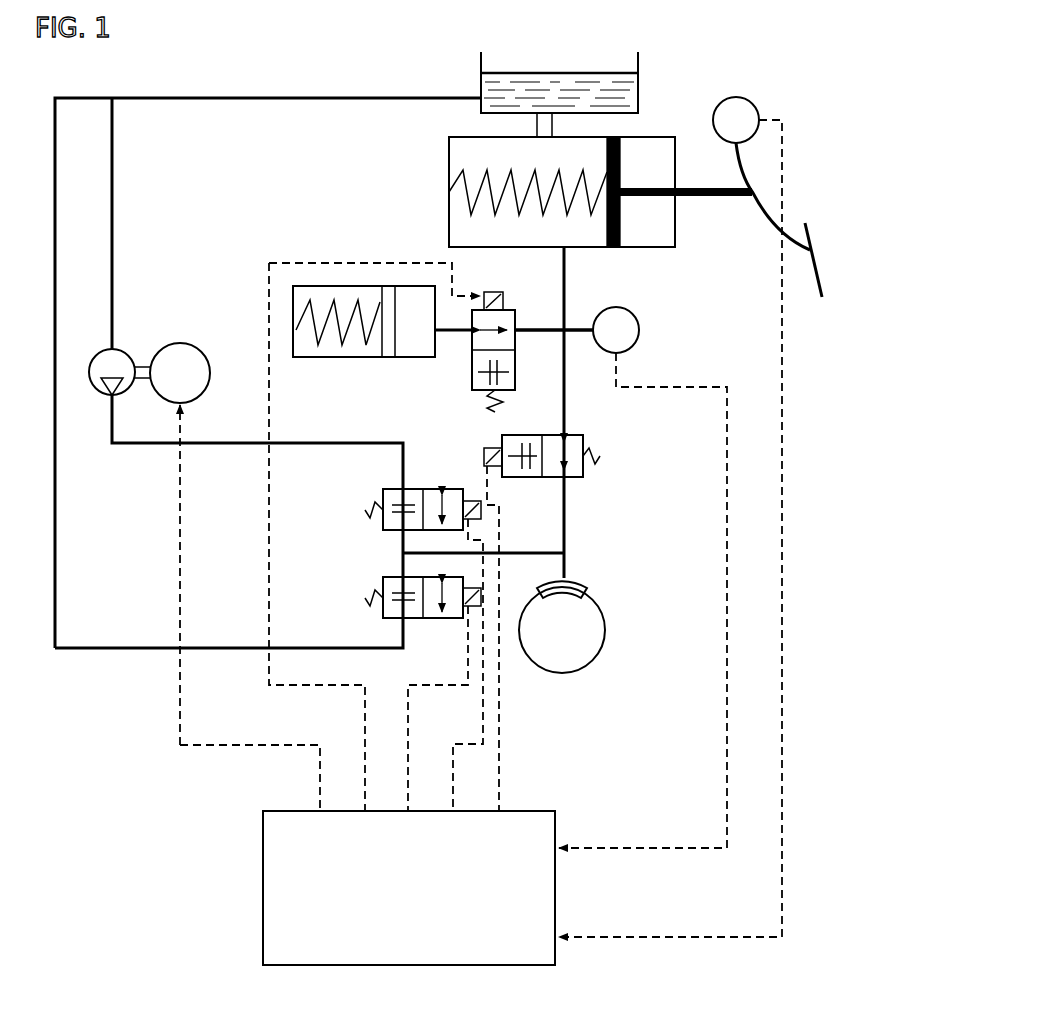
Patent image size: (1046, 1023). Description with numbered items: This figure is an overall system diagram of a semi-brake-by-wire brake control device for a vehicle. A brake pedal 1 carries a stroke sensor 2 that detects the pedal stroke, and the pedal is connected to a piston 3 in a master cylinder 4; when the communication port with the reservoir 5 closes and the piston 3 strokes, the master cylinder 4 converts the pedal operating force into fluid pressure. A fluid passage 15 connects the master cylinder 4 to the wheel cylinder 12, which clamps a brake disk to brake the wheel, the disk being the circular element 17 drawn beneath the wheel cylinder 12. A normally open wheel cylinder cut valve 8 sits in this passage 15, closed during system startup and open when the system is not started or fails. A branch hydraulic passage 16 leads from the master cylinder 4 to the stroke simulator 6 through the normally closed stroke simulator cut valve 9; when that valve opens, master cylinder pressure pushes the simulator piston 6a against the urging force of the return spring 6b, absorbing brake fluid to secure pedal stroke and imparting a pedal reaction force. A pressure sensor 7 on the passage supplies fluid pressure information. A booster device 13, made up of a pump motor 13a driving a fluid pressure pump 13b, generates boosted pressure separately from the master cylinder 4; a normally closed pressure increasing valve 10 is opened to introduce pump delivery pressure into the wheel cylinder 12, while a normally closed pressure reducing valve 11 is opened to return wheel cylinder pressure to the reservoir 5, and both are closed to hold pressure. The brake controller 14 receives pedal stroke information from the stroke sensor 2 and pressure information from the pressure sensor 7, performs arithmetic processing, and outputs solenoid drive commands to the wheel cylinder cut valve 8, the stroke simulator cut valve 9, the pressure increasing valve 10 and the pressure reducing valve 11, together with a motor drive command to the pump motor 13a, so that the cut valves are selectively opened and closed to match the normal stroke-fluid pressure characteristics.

The brake pedal 1 is at (820, 246).
The stroke sensor 2 is at (761, 104).
The piston 3 is at (624, 224).
The master cylinder 4 is at (447, 195).
The reservoir 5 is at (479, 78).
The stroke simulator 6 is at (374, 513).
The piston 6a is at (388, 345).
The return spring 6b is at (316, 345).
The pressure sensor 7 is at (642, 334).
The wheel cylinder cut valve 8 is at (605, 456).
The stroke simulator cut valve 9 is at (462, 365).
The pressure increasing valve 10 is at (364, 517).
The pressure reducing valve 11 is at (364, 605).
The wheel cylinder 12 is at (591, 590).
The booster device 13 is at (196, 539).
The pump motor 13a is at (186, 342).
The fluid pressure pump 13b is at (102, 396).
The brake controller 14 is at (525, 808).
The fluid passage 15 is at (567, 405).
The branch hydraulic passage 16 is at (541, 327).
The wheel disc 17 is at (606, 648).